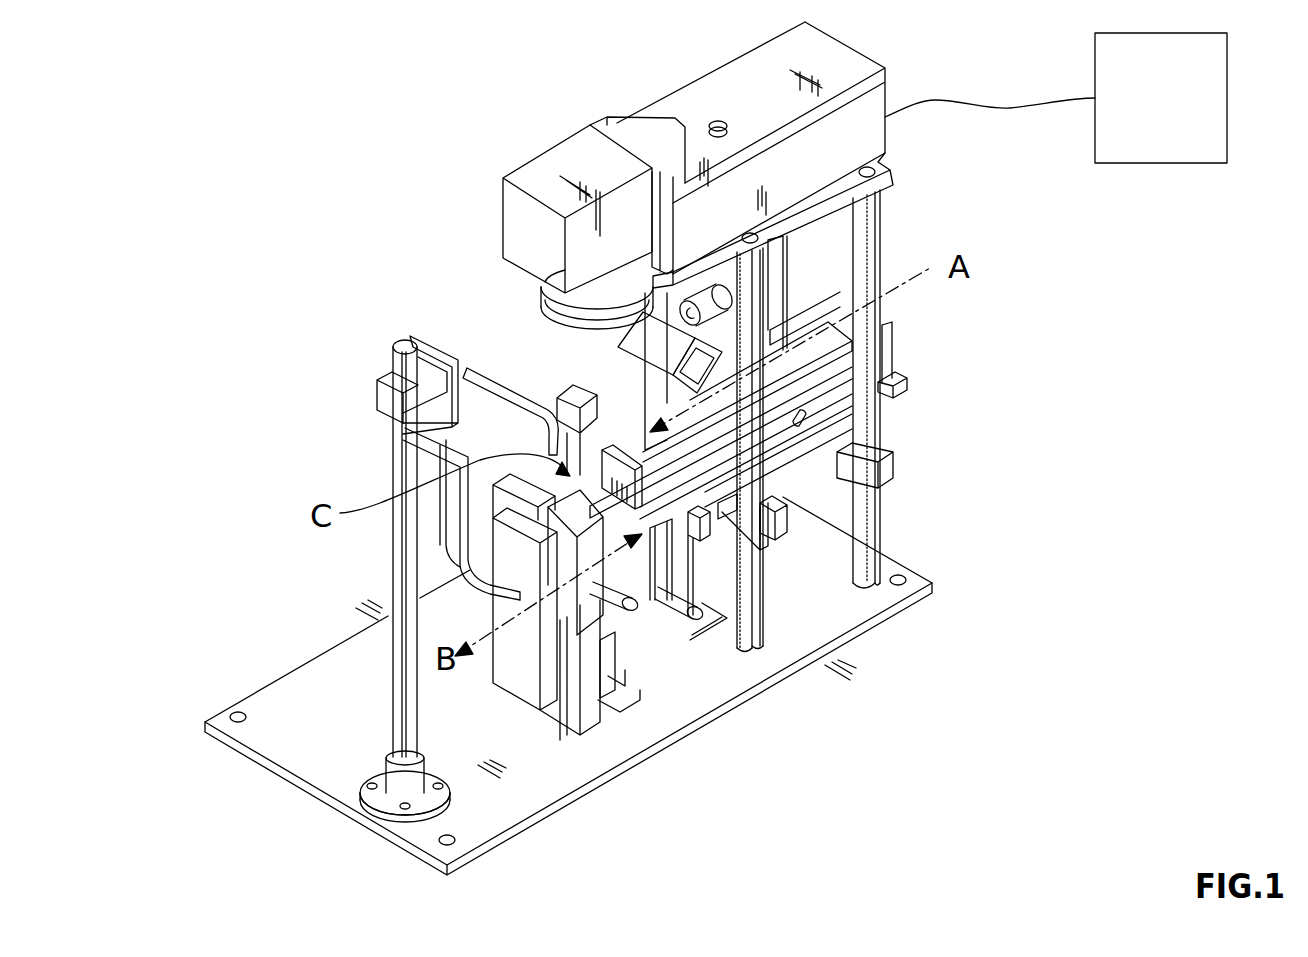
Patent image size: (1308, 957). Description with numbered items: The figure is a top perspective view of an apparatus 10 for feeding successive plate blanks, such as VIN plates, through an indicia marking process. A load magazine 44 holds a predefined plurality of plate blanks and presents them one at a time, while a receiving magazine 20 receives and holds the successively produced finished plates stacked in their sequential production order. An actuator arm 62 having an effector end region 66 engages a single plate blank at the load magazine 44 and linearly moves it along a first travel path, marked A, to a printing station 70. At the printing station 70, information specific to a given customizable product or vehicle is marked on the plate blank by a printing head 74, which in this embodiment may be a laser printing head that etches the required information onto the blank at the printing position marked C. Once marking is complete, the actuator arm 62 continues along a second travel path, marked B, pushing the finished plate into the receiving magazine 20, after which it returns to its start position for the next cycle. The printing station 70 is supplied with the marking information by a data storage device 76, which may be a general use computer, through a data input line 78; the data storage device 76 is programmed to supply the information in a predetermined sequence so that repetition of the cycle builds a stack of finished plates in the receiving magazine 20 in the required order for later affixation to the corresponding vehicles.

The apparatus 10 is at (431, 97).
The receiving magazine 20 is at (597, 603).
The load magazine 44 is at (664, 619).
The actuator arm 62 is at (678, 432).
The effector end region 66 is at (638, 513).
The printing station 70 is at (640, 525).
The printing head 74 is at (535, 312).
The data storage device 76 is at (1133, 163).
The data input line 78 is at (1046, 105).